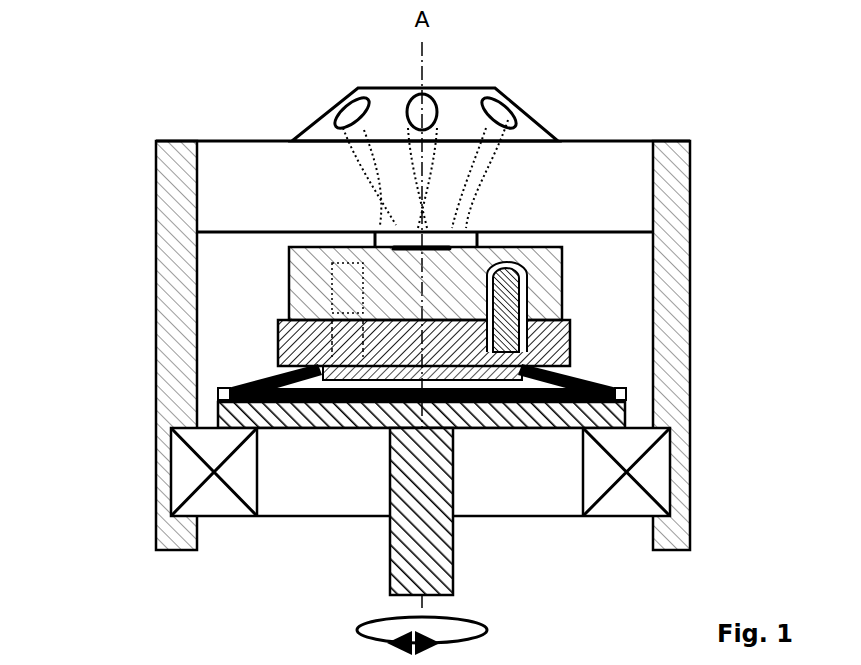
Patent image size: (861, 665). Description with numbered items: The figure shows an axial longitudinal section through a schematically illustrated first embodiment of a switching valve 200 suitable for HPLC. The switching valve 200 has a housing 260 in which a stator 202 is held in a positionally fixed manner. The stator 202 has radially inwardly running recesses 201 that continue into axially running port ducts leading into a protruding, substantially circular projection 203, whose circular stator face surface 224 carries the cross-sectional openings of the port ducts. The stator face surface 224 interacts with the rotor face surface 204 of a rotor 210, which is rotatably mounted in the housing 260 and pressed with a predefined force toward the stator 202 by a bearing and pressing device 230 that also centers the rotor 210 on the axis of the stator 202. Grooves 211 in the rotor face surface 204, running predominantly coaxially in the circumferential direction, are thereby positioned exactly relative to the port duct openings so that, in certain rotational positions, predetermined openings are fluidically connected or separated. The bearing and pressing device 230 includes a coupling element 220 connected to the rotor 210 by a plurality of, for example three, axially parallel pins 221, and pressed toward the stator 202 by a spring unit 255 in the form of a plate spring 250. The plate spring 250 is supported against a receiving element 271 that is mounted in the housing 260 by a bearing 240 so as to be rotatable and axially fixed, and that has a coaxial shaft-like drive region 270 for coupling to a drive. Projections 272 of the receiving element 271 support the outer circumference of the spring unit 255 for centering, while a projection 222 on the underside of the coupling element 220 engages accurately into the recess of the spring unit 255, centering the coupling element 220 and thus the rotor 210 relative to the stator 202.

The switching valve 200 is at (545, 86).
The recesses 201 is at (517, 122).
The stator 202 is at (518, 192).
The projection 203 is at (462, 240).
The rotor face surface 204 is at (452, 248).
The rotor 210 is at (419, 322).
The grooves 211 is at (398, 250).
The coupling element 220 is at (277, 336).
The pins 221 is at (520, 303).
The projection 222 is at (396, 380).
The stator face surface 224 is at (395, 247).
The bearing and pressing device 230 is at (635, 378).
The bearing 240 is at (228, 438).
The plate spring 250 is at (273, 383).
The spring unit 255 is at (587, 372).
The housing 260 is at (152, 530).
The drive region 270 is at (390, 565).
The receiving element 271 is at (483, 410).
The projections 272 is at (627, 397).